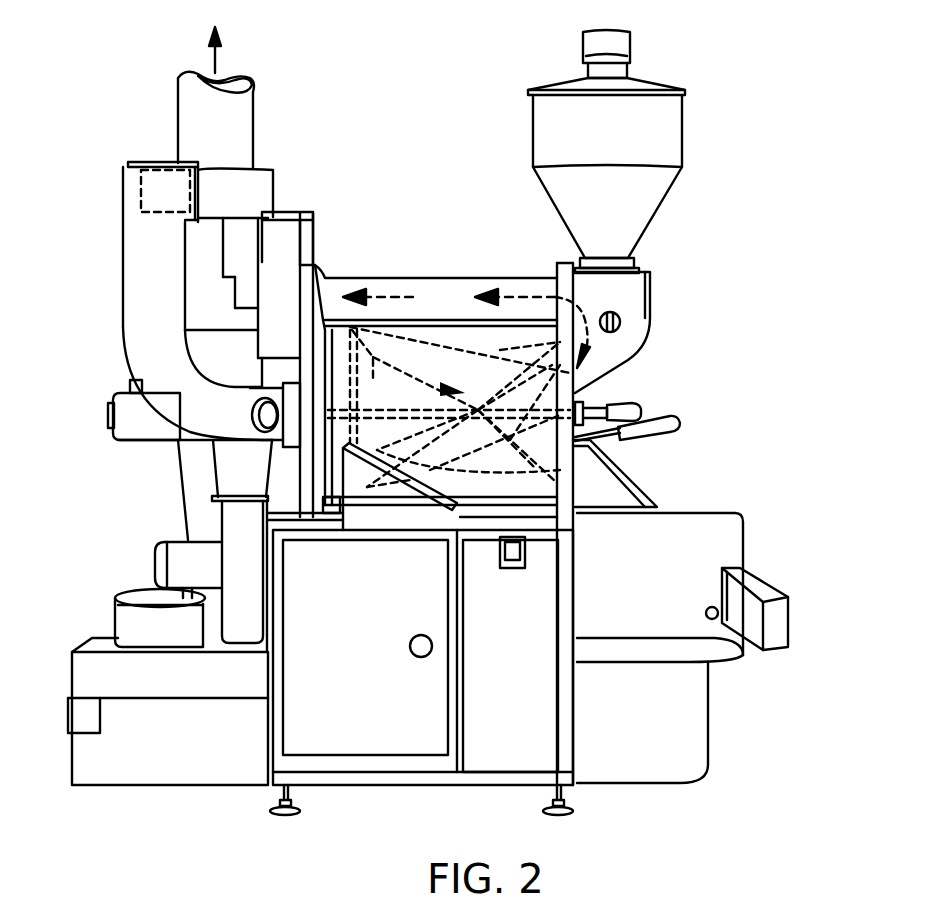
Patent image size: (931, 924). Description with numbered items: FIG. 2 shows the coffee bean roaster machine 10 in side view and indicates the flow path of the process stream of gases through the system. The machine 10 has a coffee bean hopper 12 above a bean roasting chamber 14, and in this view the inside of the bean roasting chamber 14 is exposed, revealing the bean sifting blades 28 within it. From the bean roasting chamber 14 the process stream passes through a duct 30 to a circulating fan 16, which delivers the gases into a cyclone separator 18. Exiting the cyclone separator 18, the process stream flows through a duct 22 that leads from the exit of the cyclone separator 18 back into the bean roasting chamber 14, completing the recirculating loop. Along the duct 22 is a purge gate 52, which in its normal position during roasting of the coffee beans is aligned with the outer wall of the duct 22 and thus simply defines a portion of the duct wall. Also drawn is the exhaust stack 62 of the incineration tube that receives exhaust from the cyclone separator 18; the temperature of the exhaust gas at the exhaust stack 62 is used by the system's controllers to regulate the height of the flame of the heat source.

The machine 10 is at (726, 99).
The coffee bean hopper 12 is at (680, 150).
The bean roasting chamber 14 is at (437, 357).
The circulating fan 16 is at (283, 228).
The cyclone separator 18 is at (273, 140).
The duct 22 is at (140, 260).
The bean sifting blades 28 is at (496, 345).
The duct 30 is at (386, 281).
The purge gate 52 is at (126, 188).
The exhaust stack 62 is at (185, 113).